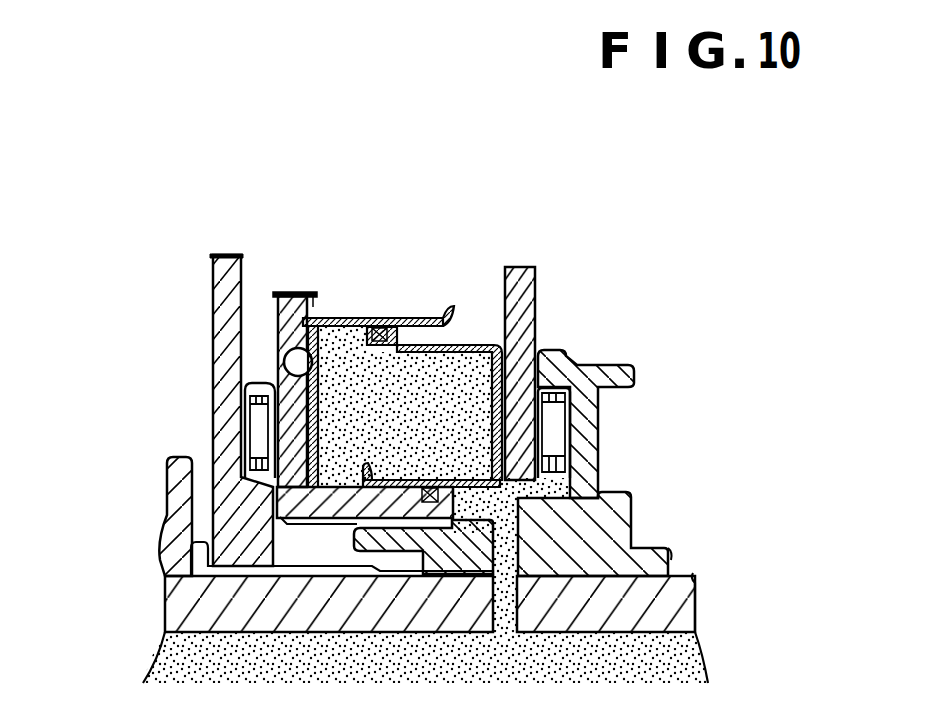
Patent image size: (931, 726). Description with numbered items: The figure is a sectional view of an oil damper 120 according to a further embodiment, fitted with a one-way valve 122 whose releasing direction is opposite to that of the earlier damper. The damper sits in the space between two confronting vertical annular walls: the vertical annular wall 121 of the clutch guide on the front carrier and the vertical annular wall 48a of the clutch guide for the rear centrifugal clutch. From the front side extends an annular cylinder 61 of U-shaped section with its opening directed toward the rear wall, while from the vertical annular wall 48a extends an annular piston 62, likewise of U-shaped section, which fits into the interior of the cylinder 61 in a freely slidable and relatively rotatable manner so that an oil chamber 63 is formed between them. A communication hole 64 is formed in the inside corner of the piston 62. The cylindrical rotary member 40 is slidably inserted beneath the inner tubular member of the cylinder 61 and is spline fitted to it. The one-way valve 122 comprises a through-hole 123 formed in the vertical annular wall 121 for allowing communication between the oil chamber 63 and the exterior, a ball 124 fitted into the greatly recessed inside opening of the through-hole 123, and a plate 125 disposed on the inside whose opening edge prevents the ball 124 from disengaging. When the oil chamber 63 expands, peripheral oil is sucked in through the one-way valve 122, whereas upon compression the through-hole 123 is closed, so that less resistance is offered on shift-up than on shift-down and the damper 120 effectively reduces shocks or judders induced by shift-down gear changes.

The cylindrical rotary member 40 is at (617, 528).
The vertical annular wall 48a is at (521, 270).
The annular cylinder 61 is at (366, 312).
The annular piston 62 is at (473, 342).
The oil chamber 63 is at (420, 413).
The communication hole 64 is at (540, 508).
The oil damper 120 is at (385, 222).
The vertical annular wall 121 is at (215, 423).
The one-way valve 122 is at (352, 142).
The through-hole 123 is at (278, 345).
The ball 124 is at (297, 347).
The plate 125 is at (327, 317).